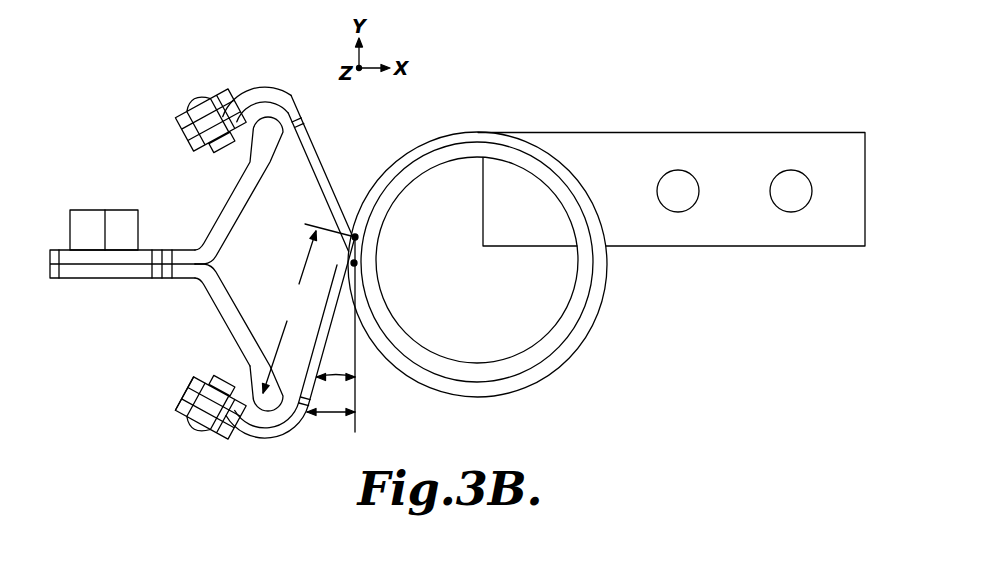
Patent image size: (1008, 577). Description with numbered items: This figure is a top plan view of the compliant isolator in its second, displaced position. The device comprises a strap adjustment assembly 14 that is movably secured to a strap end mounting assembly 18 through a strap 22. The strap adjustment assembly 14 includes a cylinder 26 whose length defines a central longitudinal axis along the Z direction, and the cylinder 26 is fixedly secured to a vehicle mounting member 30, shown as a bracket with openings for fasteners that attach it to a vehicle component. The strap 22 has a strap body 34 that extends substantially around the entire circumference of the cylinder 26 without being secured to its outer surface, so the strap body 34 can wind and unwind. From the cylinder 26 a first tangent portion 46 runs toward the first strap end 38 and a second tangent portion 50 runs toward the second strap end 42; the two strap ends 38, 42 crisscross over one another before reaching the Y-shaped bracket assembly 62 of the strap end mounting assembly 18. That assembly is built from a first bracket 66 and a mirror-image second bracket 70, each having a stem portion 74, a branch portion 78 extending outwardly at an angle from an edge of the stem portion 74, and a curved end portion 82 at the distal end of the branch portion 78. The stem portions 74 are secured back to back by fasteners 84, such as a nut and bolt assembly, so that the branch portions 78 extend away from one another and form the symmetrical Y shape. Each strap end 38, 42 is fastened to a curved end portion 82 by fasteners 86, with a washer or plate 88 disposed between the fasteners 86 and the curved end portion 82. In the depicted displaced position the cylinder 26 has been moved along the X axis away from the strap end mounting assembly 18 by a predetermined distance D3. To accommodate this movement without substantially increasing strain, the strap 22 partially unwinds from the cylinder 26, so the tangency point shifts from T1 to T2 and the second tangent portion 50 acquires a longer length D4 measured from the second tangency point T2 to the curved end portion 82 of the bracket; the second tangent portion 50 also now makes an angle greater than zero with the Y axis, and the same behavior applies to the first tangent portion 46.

The strap adjustment assembly 14 is at (645, 303).
The strap end mounting assembly 18 is at (78, 307).
The strap 22 is at (385, 147).
The cylinder 26 is at (549, 357).
The vehicle mounting member 30 is at (781, 247).
The strap body 34 is at (592, 334).
The first strap end 38 is at (278, 89).
The second strap end 42 is at (296, 428).
The first tangent portion 46 is at (333, 178).
The second tangent portion 50 is at (322, 389).
The Y-shaped bracket assembly 62 is at (152, 210).
The first bracket 66 is at (224, 190).
The second bracket 70 is at (202, 301).
The stem portion 74 is at (127, 277).
The branch portion 78 is at (236, 341).
The curved end portion 82 is at (254, 438).
The fasteners 84 is at (92, 209).
The fasteners 86 is at (197, 432).
The washer or plate 88 is at (180, 402).
The first tangency point T1 is at (358, 263).
The second tangency point T2 is at (358, 237).
The predetermined distance D3 is at (334, 426).
The length of the second tangent portion D4 is at (309, 308).